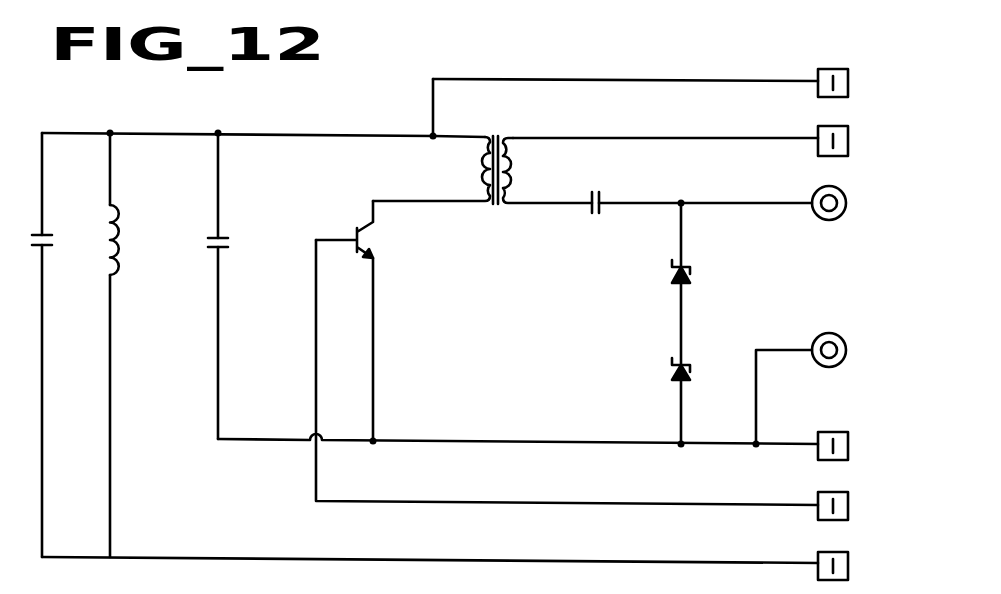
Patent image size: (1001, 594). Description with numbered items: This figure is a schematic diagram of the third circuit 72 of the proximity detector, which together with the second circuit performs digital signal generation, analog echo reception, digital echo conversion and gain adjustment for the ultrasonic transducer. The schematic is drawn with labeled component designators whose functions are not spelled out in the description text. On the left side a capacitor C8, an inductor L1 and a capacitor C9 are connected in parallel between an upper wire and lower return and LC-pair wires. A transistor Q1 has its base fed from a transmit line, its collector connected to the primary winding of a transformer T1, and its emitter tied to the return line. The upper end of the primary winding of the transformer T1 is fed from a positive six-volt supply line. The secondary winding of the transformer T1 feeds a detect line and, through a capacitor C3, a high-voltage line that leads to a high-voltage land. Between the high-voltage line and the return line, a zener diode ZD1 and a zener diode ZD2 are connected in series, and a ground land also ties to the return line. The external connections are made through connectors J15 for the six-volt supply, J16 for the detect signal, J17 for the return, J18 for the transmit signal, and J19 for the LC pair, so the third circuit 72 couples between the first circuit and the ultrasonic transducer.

The third circuit 72 is at (578, 72).
The capacitor C8 is at (57, 243).
The capacitor C9 is at (233, 243).
The capacitor C3 is at (592, 192).
The inductor L1 is at (127, 240).
The transformer T1 is at (482, 170).
The transistor Q1 is at (358, 321).
The zener diode ZD1 is at (656, 271).
The zener diode ZD2 is at (652, 368).
The connector J15 is at (833, 70).
The connector J16 is at (833, 128).
The connector J17 is at (833, 433).
The connector J18 is at (833, 494).
The connector J19 is at (833, 554).